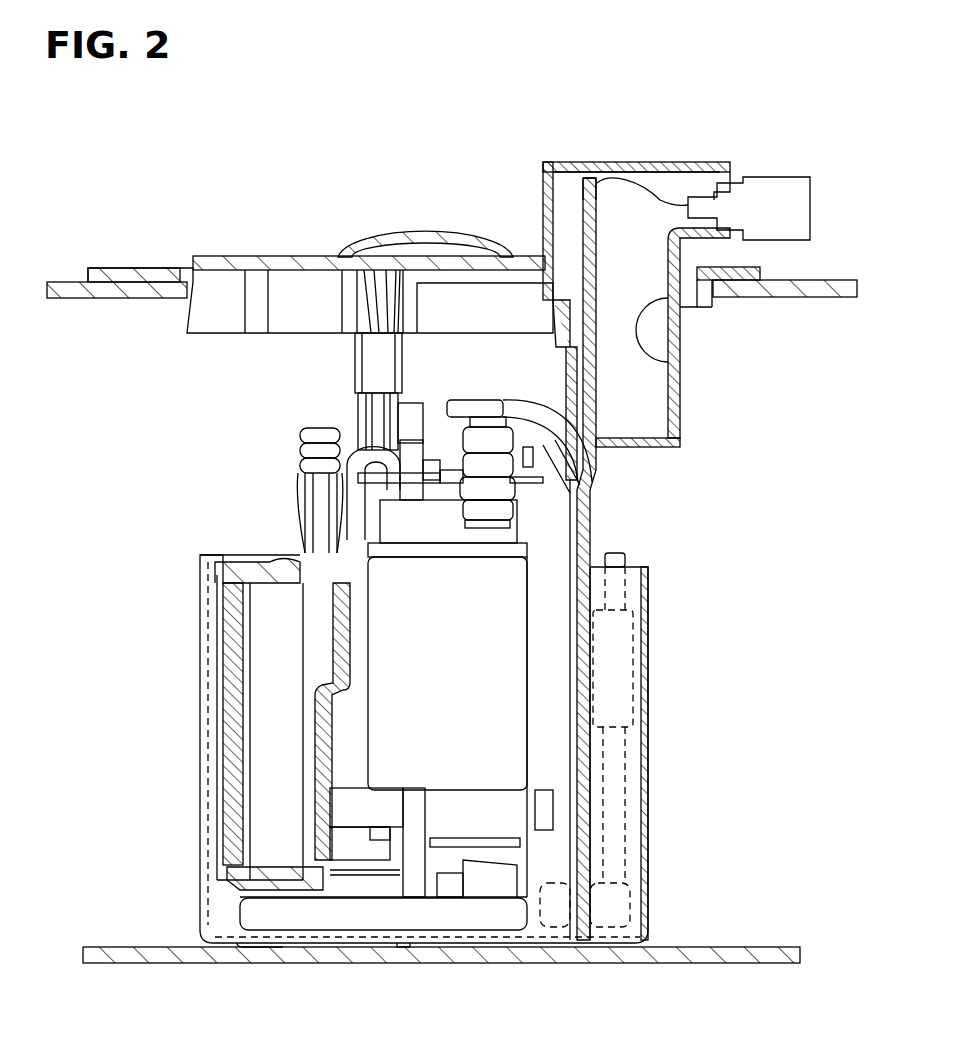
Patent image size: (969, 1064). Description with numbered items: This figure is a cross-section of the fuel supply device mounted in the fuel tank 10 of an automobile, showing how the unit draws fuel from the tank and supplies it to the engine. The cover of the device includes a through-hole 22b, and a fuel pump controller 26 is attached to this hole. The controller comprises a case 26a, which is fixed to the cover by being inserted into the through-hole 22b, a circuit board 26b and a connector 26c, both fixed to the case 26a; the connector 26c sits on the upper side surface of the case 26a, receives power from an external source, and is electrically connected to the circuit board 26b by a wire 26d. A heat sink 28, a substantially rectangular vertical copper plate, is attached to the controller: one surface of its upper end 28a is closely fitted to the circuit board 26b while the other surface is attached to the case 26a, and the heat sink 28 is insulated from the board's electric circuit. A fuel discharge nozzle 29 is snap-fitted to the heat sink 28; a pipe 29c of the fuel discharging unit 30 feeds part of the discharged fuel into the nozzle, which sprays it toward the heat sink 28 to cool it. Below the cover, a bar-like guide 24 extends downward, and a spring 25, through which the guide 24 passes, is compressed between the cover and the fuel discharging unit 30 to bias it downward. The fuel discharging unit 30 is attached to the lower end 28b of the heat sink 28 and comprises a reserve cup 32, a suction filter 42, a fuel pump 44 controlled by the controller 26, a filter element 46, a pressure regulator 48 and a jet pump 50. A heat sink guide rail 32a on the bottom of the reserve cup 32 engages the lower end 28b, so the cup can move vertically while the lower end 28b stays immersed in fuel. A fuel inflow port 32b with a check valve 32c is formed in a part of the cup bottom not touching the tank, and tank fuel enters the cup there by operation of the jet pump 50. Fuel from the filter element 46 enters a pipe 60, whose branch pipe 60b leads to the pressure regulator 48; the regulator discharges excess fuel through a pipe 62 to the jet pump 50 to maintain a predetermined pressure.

The fuel tank 10 is at (141, 963).
The through-hole 22b is at (680, 365).
The guide 24 is at (378, 422).
The spring 25 is at (358, 400).
The fuel pump controller 26 is at (730, 150).
The case 26a is at (548, 162).
The circuit board 26b is at (601, 172).
The connector 26c is at (792, 177).
The wire 26d is at (655, 172).
The heat sink 28 is at (595, 520).
The upper end of the heat sink 28a is at (548, 222).
The lower end of the heat sink 28b is at (590, 695).
The fuel discharge nozzle 29 is at (589, 474).
The pipe 29c is at (455, 402).
The fuel discharging unit 30 is at (198, 526).
The reserve cup 32 is at (648, 890).
The heat sink guide rail 32a is at (600, 820).
The fuel inflow port 32b is at (322, 947).
The check valve 32c is at (300, 948).
The suction filter 42 is at (270, 948).
The fuel pump 44 is at (300, 520).
The filter element 46 is at (275, 610).
The pressure regulator 48 is at (648, 655).
The jet pump 50 is at (607, 945).
The pipe 60 is at (297, 477).
The branch pipe 60b is at (648, 580).
The pipe 62 is at (648, 762).